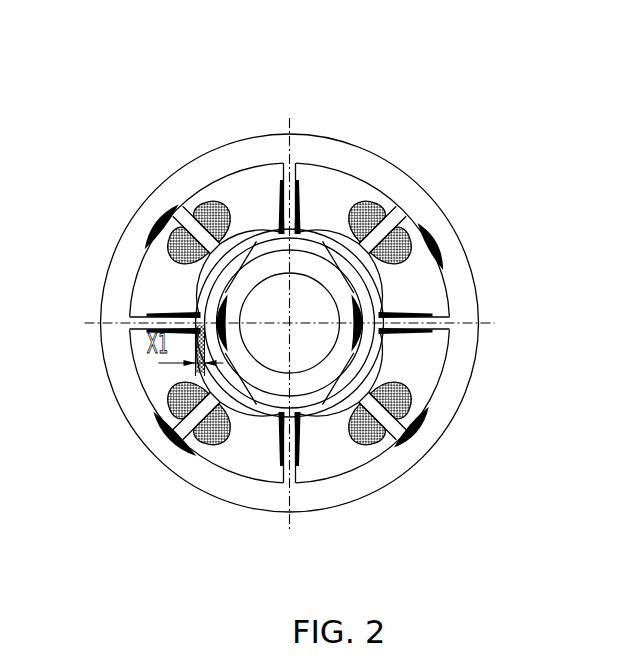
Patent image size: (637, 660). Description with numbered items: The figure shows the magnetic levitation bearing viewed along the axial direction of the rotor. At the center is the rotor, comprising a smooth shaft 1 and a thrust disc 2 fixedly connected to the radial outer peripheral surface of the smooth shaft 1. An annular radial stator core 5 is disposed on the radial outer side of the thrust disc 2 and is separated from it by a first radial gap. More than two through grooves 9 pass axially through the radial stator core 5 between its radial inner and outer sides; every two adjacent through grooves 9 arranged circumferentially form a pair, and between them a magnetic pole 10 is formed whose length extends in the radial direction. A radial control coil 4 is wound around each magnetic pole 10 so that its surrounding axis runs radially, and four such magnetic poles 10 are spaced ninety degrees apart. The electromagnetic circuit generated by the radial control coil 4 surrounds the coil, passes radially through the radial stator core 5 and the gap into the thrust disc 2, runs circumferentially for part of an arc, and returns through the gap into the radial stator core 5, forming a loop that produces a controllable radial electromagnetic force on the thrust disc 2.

The smooth shaft 1 is at (412, 329).
The thrust disc 2 is at (413, 288).
The radial control coil 4 is at (323, 286).
The radial stator core 5 is at (290, 256).
The through groove 9 is at (290, 333).
The magnetic pole 10 is at (309, 325).